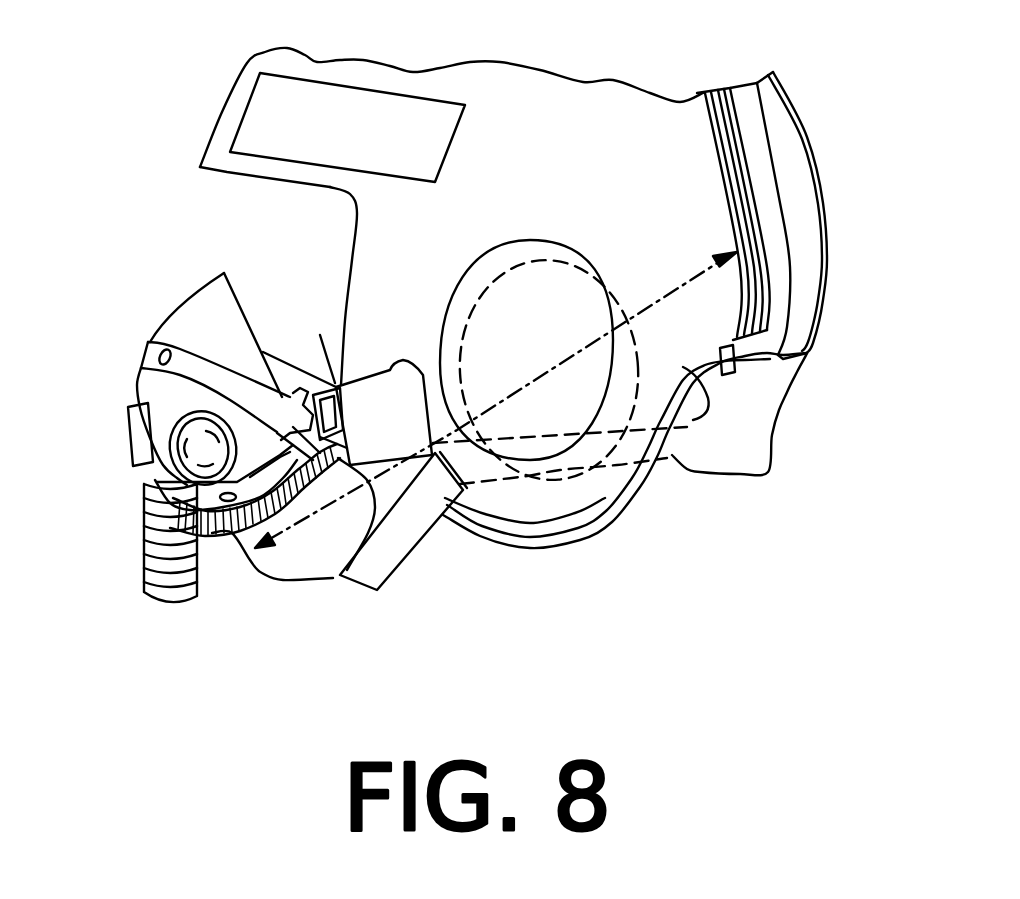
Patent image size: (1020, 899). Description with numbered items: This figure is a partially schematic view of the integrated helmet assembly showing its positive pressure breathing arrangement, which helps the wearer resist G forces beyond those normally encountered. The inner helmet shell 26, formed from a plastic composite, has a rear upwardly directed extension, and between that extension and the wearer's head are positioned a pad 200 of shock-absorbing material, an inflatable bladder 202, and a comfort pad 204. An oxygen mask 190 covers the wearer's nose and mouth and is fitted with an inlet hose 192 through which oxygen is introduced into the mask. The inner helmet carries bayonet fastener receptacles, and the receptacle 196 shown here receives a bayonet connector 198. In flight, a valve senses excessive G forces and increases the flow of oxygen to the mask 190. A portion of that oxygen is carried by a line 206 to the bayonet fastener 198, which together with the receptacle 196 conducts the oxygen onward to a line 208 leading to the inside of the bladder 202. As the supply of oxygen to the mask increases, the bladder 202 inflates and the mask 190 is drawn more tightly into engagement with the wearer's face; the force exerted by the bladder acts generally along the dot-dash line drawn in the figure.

The shell 26 is at (817, 180).
The oxygen mask 190 is at (282, 570).
The inlet hose 192 is at (107, 587).
The bayonet fastener receptacle 196 is at (365, 403).
The bayonet connector 198 is at (338, 460).
The pad of shock-absorbing material 200 is at (763, 77).
The inflatable bladder 202 is at (745, 82).
The comfort pad 204 is at (723, 163).
The line 206 is at (212, 538).
The line 208 is at (573, 523).